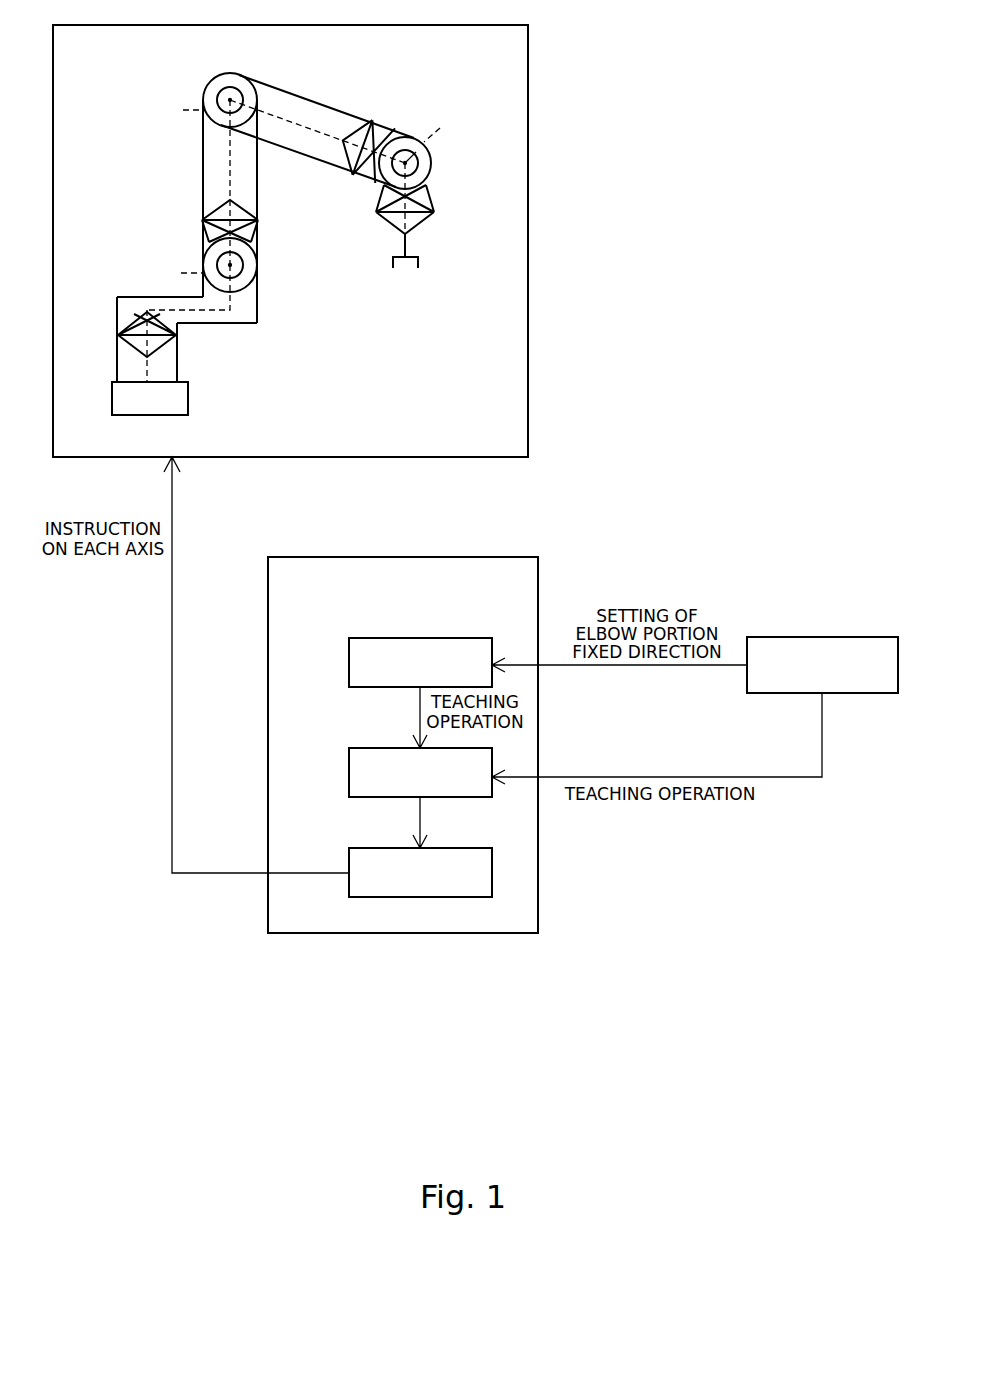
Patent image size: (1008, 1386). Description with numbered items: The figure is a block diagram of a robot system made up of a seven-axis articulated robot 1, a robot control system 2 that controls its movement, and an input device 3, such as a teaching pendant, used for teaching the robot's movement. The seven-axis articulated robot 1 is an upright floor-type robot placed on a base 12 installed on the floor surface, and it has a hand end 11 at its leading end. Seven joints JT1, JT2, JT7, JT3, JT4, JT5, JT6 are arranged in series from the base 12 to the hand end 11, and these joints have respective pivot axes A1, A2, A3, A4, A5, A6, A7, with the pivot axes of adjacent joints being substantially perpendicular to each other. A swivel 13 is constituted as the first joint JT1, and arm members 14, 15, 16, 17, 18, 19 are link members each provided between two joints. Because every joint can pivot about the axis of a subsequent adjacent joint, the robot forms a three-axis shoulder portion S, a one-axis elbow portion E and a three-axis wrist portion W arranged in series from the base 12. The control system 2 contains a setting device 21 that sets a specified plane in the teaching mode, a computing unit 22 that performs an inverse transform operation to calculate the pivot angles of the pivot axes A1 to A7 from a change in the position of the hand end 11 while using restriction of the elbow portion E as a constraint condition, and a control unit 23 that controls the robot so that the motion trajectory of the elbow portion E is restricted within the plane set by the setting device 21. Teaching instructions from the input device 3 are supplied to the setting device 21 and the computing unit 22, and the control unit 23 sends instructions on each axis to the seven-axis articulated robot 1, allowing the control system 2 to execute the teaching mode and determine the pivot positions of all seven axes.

The seven-axis articulated robot 1 is at (528, 343).
The robot control system 2 is at (484, 557).
The input device 3 is at (835, 637).
The hand end 11 is at (412, 248).
The base 12 is at (190, 390).
The swivel 13 is at (128, 360).
The arm member 14 is at (258, 324).
The arm member 15 is at (259, 245).
The arm member 16 is at (222, 167).
The arm member 17 is at (281, 110).
The arm member 18 is at (345, 123).
The arm member 19 is at (445, 217).
The setting device 21 is at (349, 657).
The computing unit 22 is at (349, 770).
The control unit 23 is at (349, 853).
The first joint JT1 is at (173, 343).
The second joint JT2 is at (260, 282).
The third joint JT3 is at (206, 70).
The fourth joint JT4 is at (378, 130).
The fifth joint JT5 is at (434, 162).
The sixth joint JT6 is at (428, 222).
The seventh joint JT7 is at (213, 228).
The pivot axis A1 is at (128, 320).
The pivot axis A2 is at (188, 286).
The pivot axis A3 is at (178, 111).
The pivot axis A4 is at (332, 148).
The pivot axis A5 is at (447, 128).
The pivot axis A6 is at (390, 217).
The pivot axis A7 is at (227, 212).
The elbow portion E is at (181, 80).
The wrist portion W is at (449, 116).
The shoulder portion S is at (206, 270).